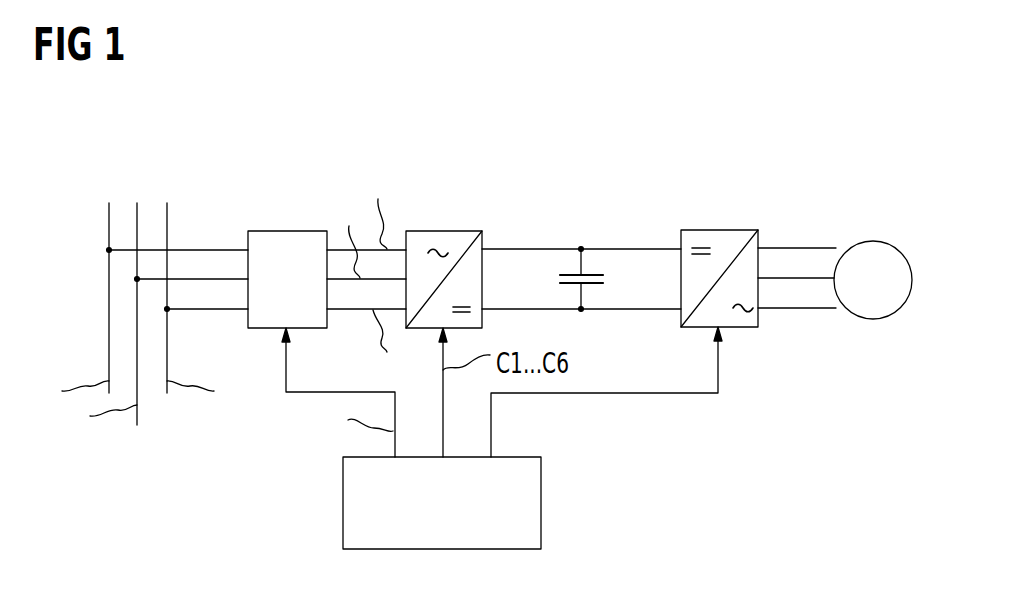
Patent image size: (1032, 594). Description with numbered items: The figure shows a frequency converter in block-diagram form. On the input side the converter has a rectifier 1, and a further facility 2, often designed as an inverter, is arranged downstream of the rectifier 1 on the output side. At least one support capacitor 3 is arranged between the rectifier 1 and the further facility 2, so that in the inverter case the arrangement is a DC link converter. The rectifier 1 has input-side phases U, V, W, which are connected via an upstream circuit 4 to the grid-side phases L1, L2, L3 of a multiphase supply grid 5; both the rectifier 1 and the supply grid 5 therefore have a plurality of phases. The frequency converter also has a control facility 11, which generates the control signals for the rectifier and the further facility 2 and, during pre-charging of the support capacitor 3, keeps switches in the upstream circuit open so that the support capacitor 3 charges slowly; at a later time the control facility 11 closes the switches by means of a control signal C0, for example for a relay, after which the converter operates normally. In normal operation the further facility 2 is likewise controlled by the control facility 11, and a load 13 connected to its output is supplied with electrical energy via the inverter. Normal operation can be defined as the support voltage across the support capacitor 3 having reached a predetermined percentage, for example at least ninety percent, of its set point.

The rectifier 1 is at (447, 231).
The further facility 2 is at (722, 230).
The support capacitor 3 is at (572, 273).
The upstream circuit 4 is at (291, 231).
The supply grid 5 is at (131, 182).
The control facility 11 is at (543, 503).
The load 13 is at (875, 240).
The grid-side phase L1 is at (70, 390).
The grid-side phase L2 is at (99, 415).
The grid-side phase L3 is at (206, 390).
The input-side phase U is at (366, 209).
The input-side phase V is at (366, 238).
The input-side phase W is at (366, 350).
The control signal C0 is at (354, 422).